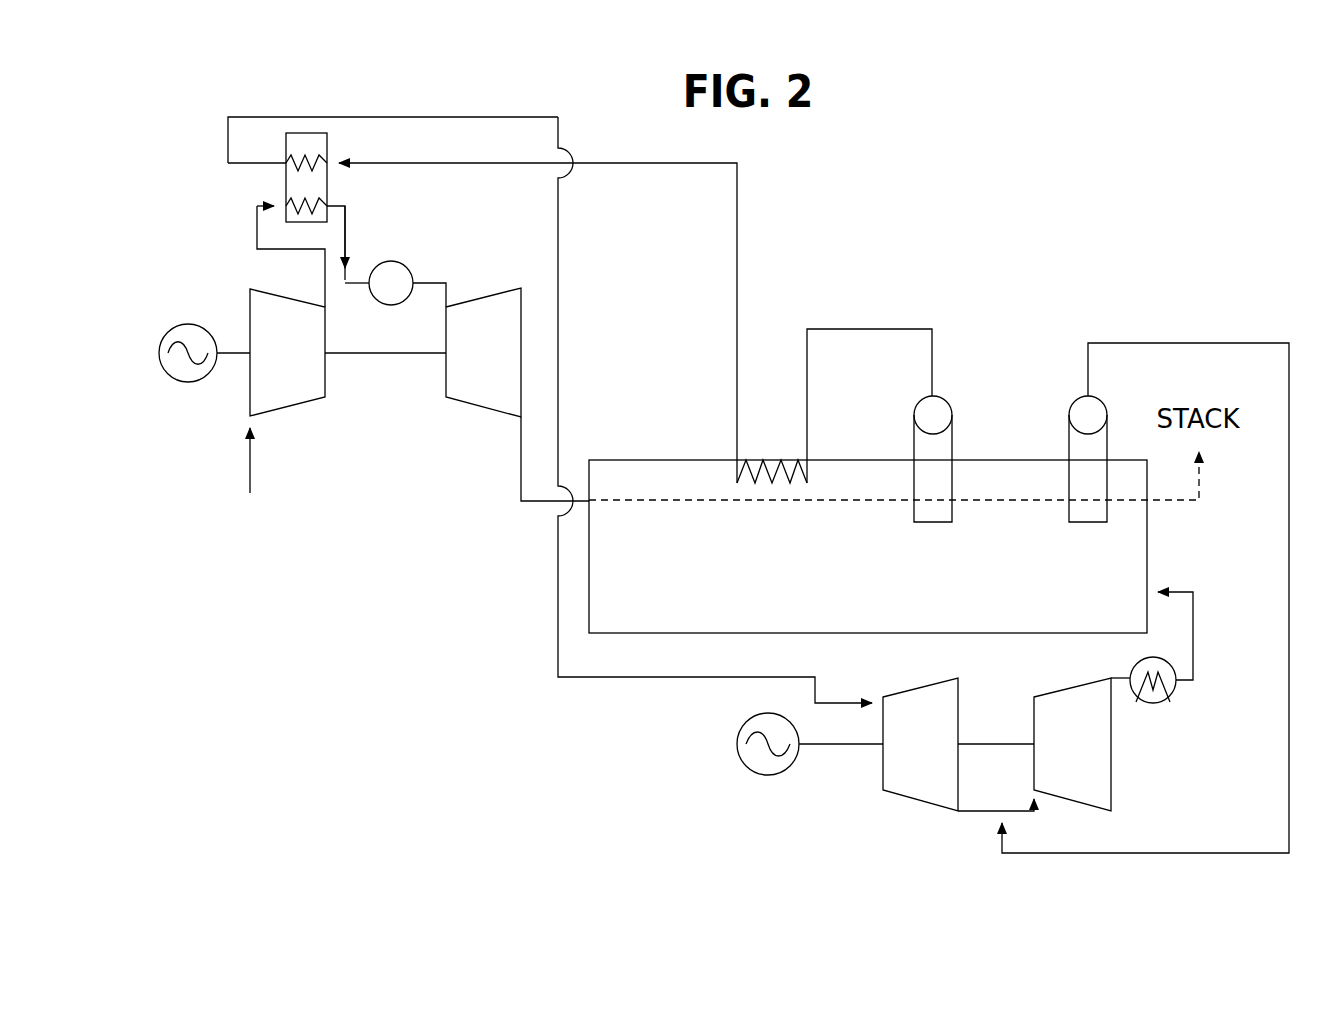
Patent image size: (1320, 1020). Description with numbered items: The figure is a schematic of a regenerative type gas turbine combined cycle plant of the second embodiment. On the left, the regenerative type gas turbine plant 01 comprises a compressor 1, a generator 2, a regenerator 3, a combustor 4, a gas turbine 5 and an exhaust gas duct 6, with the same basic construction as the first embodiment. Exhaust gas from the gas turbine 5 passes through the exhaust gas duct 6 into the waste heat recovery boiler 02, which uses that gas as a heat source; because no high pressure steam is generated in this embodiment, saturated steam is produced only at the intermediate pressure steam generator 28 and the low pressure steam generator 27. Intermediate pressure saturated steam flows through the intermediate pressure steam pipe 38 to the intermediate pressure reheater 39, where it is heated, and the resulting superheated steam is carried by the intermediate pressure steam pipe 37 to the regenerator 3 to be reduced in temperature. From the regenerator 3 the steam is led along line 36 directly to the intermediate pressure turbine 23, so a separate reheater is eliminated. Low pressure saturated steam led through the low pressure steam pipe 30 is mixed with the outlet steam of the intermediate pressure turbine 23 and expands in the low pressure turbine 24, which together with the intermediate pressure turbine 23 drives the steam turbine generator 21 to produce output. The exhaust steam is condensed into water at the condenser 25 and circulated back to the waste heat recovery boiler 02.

The compressor 1 is at (250, 400).
The generator 2 is at (195, 325).
The regenerator 3 is at (330, 184).
The combustor 4 is at (410, 270).
The gas turbine 5 is at (486, 295).
The exhaust gas duct 6 is at (522, 452).
The regenerative type gas turbine plant 01 is at (372, 466).
The waste heat recovery boiler 02 is at (1044, 336).
The steam line 36 is at (561, 358).
The intermediate pressure steam pipe 37 is at (737, 192).
The intermediate pressure steam pipe 38 is at (882, 330).
The intermediate pressure reheater 39 is at (782, 468).
The intermediate pressure steam generator 28 is at (940, 397).
The low pressure steam generator 27 is at (1106, 403).
The low pressure steam pipe 30 is at (1232, 343).
The generator 21 is at (760, 775).
The intermediate pressure turbine 23 is at (883, 790).
The low pressure turbine 24 is at (1113, 785).
The condenser 25 is at (1153, 703).